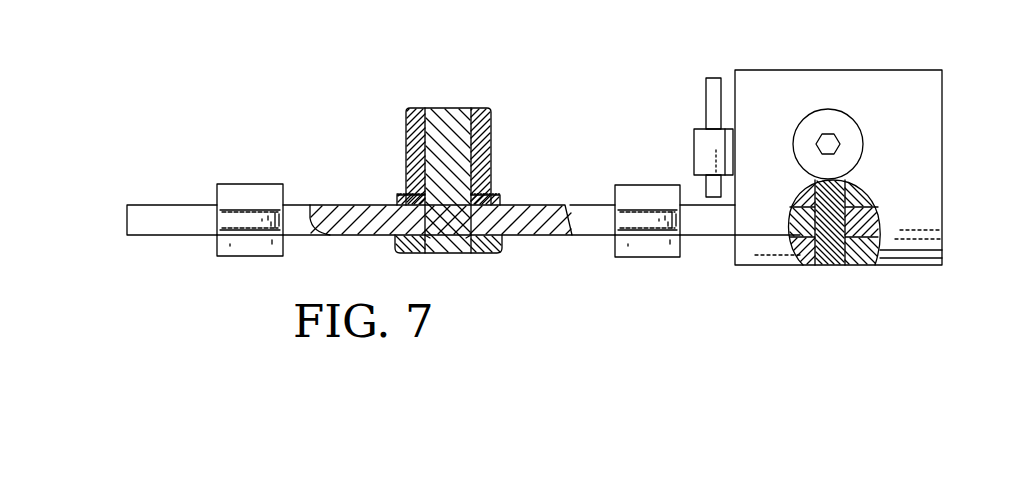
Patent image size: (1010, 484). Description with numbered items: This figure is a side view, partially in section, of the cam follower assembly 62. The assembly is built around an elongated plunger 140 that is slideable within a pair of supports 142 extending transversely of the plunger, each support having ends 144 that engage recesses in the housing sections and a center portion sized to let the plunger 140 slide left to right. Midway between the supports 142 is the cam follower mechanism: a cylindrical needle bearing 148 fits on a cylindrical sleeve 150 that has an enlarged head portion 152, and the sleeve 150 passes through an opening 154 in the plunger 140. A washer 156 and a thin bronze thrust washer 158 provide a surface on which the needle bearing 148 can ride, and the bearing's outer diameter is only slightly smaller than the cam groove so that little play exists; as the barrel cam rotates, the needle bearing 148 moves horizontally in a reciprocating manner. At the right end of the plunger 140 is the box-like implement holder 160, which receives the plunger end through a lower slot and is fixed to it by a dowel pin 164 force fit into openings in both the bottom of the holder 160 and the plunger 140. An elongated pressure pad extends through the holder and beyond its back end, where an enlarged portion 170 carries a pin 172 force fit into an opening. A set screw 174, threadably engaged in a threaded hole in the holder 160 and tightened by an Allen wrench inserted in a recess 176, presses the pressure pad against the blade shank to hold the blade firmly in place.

The cam follower assembly 62 is at (880, 30).
The elongated plunger 140 is at (166, 218).
The supports 142 is at (238, 184).
The ends 144 is at (248, 222).
The cylindrical needle bearing 148 is at (491, 125).
The cylindrical sleeve 150 is at (447, 132).
The enlarged head portion 152 is at (486, 260).
The opening 154 is at (447, 222).
The washer 156 is at (397, 201).
The thin bronze thrust washer 158 is at (499, 192).
The implement holder 160 is at (905, 100).
The dowel pin 164 is at (828, 242).
The enlarged portion 170 is at (698, 152).
The pin 172 is at (708, 92).
The set screw 174 is at (805, 146).
The recess 176 is at (840, 146).